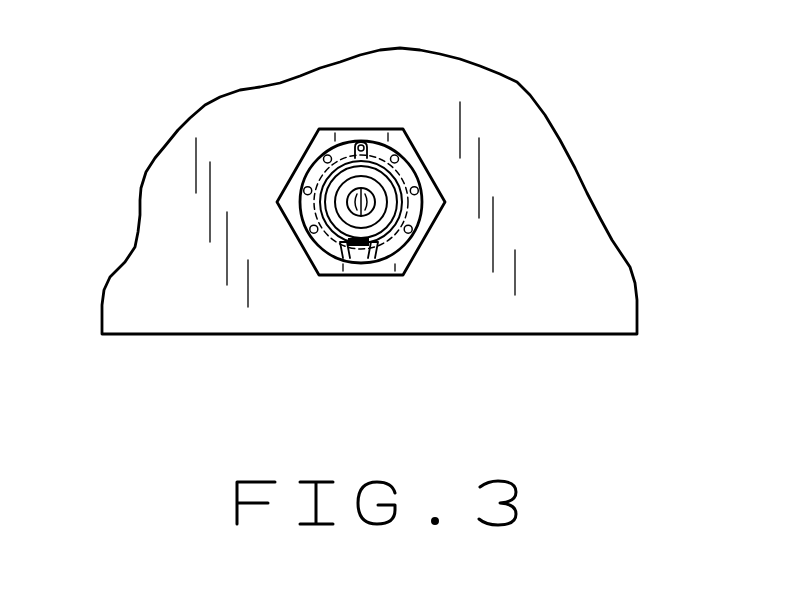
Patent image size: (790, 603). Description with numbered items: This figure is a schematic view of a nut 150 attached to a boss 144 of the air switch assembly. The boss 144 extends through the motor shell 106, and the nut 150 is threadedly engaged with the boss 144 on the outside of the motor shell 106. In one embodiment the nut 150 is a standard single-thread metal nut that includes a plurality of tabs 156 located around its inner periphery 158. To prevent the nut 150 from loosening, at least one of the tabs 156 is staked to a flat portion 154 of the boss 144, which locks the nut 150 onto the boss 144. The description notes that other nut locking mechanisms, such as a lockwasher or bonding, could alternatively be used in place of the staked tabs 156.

The motor shell 106 is at (188, 167).
The nut 150 is at (294, 160).
The flat portion 154 is at (331, 155).
The boss 144 is at (403, 173).
The inner periphery 158 is at (318, 212).
The tabs 156 is at (402, 271).